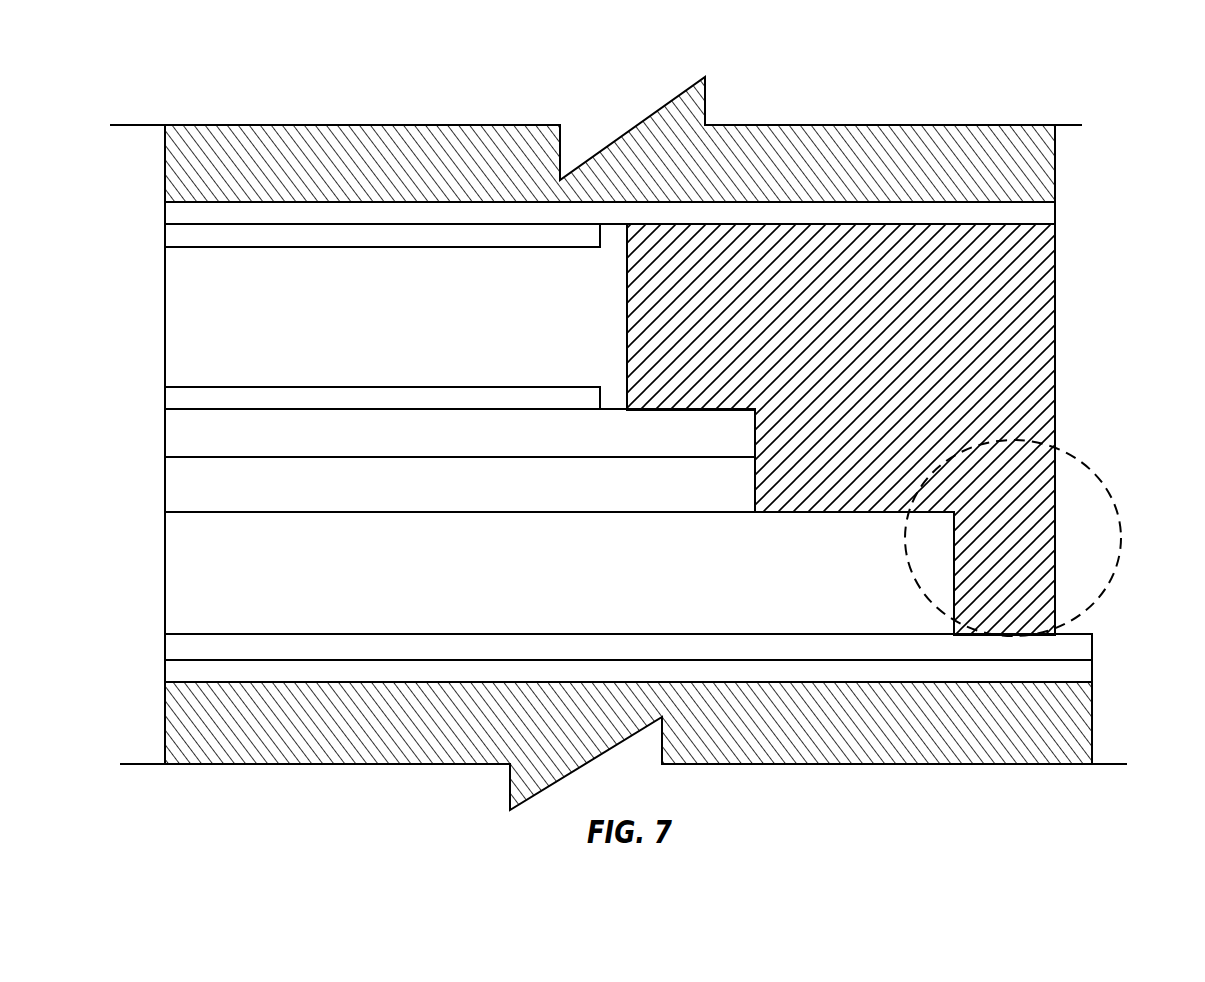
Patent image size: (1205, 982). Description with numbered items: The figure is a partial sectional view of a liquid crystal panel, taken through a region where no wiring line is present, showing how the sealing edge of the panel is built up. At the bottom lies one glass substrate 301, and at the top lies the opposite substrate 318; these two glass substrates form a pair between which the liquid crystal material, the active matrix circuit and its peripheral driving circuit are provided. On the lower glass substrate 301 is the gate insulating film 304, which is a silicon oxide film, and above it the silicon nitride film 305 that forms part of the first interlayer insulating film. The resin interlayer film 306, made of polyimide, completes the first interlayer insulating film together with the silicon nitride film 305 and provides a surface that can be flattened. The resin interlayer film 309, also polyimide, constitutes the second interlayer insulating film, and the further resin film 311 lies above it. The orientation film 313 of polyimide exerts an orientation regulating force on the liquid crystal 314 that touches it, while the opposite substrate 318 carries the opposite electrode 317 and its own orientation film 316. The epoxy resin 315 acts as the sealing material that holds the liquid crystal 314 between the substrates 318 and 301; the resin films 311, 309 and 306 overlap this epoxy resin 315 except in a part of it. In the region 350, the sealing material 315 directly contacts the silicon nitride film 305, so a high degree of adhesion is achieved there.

The glass substrate 301 is at (629, 746).
The gate insulating film 304 is at (589, 686).
The silicon nitride film 305 is at (589, 647).
The resin interlayer film 306 is at (589, 573).
The resin interlayer film 309 is at (520, 495).
The resin film 311 is at (421, 443).
The orientation film 313 is at (343, 413).
The liquid crystal 314 is at (357, 317).
The epoxy resin 315 is at (880, 429).
The orientation film 316 is at (343, 252).
The opposite electrode 317 is at (559, 203).
The opposite substrate 318 is at (571, 140).
The region 350 is at (1042, 532).